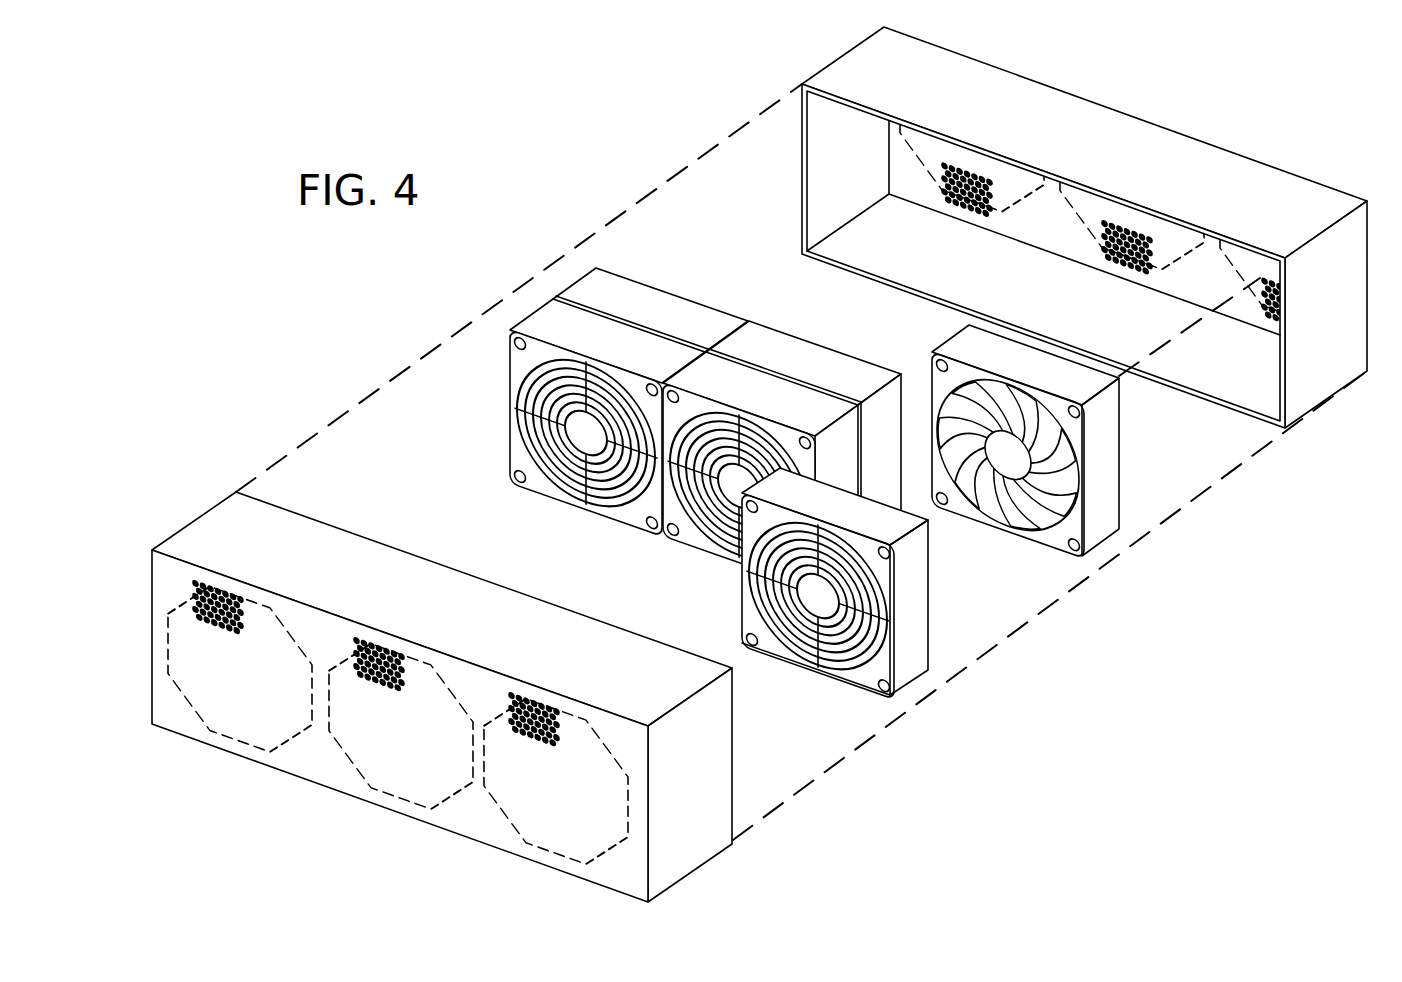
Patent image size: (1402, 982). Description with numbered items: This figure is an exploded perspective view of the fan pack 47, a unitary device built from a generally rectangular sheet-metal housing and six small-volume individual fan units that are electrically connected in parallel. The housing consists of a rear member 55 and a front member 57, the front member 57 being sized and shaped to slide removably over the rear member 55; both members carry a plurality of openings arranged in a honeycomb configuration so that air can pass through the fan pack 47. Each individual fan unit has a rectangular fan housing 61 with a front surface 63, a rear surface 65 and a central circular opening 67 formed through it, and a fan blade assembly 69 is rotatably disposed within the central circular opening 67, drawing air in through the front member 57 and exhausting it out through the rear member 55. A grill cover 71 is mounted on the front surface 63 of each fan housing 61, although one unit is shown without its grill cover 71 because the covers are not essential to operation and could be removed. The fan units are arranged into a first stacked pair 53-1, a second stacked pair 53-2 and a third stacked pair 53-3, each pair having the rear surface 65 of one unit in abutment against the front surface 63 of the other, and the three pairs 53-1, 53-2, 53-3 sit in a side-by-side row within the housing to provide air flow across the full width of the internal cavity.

The fan pack 47 is at (1115, 770).
The first stacked pair of fan units 53-1 is at (527, 312).
The second stacked pair of fan units 53-2 is at (780, 407).
The third stacked pair of fan units 53-3 is at (947, 632).
The rear member 55 is at (1241, 189).
The front member 57 is at (693, 843).
The fan housing 61 is at (1030, 440).
The front surface 63 is at (1080, 527).
The rear surface 65 is at (1118, 408).
The central circular opening 67 is at (982, 398).
The fan blade assembly 69 is at (1000, 513).
The grill cover 71 is at (857, 690).